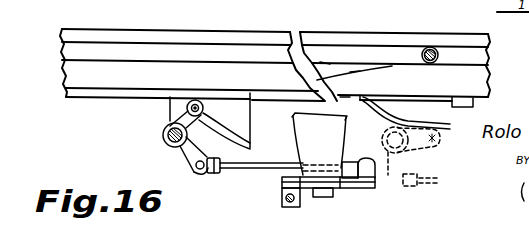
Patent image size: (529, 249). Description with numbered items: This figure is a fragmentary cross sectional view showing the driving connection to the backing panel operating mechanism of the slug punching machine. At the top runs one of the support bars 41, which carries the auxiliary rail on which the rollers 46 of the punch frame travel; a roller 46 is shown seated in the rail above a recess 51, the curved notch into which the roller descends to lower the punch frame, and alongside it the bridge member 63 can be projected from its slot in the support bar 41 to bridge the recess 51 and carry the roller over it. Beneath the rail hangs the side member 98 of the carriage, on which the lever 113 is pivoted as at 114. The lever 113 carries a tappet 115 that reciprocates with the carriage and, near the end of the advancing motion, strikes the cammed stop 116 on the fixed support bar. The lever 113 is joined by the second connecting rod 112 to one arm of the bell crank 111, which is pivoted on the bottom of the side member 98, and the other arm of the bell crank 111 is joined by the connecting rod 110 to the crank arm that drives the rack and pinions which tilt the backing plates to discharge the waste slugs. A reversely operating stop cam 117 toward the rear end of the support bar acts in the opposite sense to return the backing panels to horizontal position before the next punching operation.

The support bar 41 is at (90, 47).
The roller 46 is at (434, 47).
The bridge member 63 is at (325, 70).
The recess 51 is at (355, 73).
The cammed stop 116 is at (433, 110).
The stop cam 117 is at (220, 100).
The tappet 115 is at (188, 106).
The lever 113 is at (170, 117).
The pivot 114 is at (167, 141).
The second connecting rod 112 is at (247, 169).
The side member 98 is at (328, 143).
The connecting rod 110 is at (300, 201).
The bell crank 111 is at (353, 186).